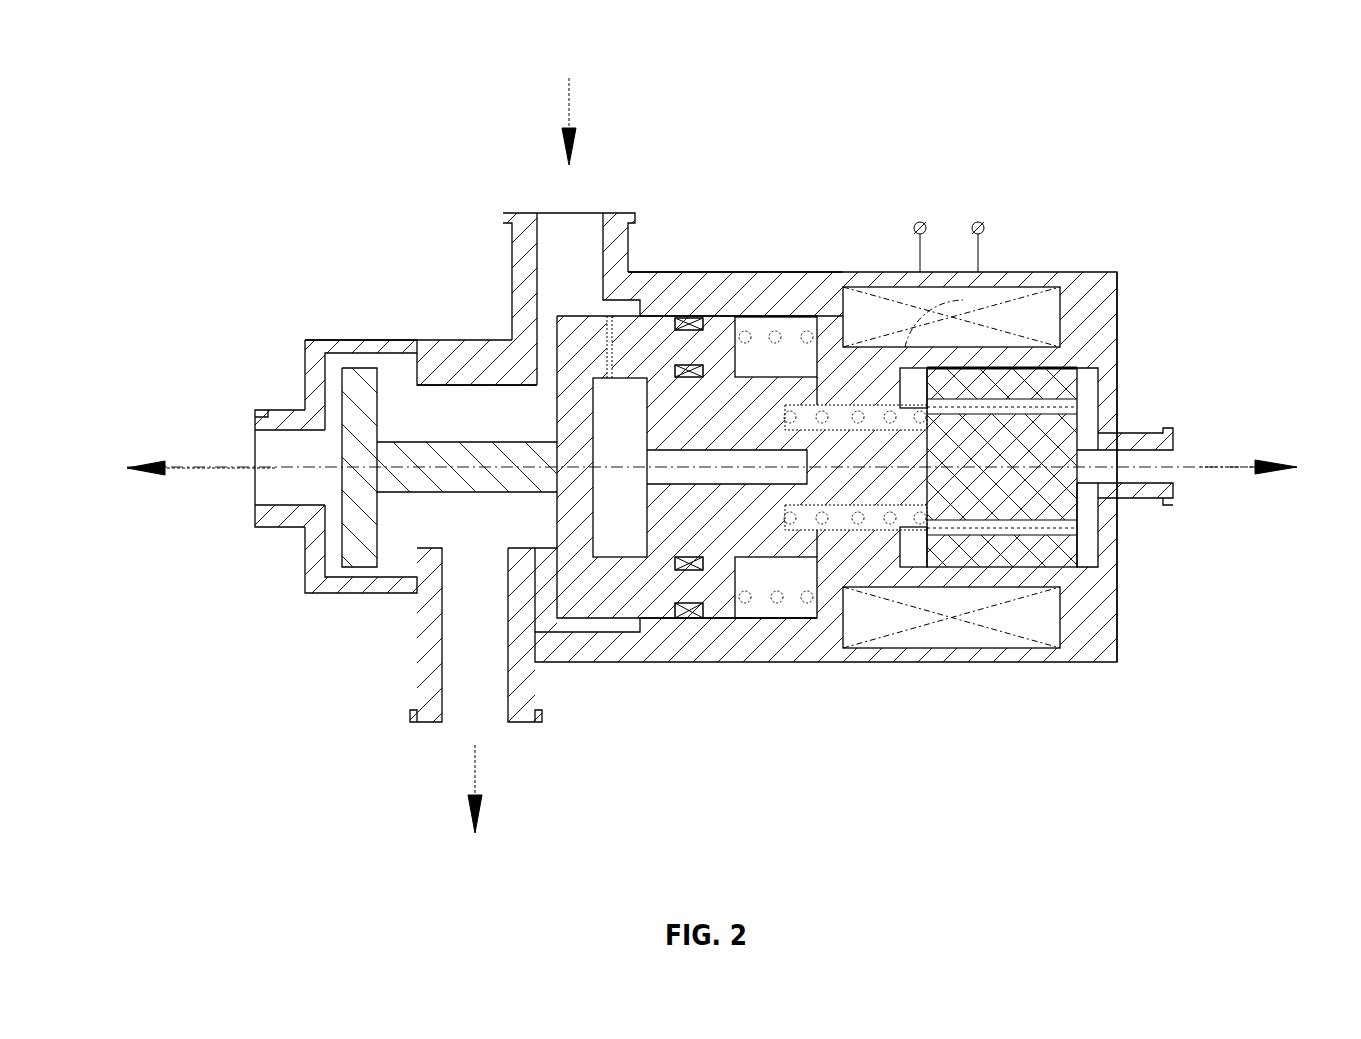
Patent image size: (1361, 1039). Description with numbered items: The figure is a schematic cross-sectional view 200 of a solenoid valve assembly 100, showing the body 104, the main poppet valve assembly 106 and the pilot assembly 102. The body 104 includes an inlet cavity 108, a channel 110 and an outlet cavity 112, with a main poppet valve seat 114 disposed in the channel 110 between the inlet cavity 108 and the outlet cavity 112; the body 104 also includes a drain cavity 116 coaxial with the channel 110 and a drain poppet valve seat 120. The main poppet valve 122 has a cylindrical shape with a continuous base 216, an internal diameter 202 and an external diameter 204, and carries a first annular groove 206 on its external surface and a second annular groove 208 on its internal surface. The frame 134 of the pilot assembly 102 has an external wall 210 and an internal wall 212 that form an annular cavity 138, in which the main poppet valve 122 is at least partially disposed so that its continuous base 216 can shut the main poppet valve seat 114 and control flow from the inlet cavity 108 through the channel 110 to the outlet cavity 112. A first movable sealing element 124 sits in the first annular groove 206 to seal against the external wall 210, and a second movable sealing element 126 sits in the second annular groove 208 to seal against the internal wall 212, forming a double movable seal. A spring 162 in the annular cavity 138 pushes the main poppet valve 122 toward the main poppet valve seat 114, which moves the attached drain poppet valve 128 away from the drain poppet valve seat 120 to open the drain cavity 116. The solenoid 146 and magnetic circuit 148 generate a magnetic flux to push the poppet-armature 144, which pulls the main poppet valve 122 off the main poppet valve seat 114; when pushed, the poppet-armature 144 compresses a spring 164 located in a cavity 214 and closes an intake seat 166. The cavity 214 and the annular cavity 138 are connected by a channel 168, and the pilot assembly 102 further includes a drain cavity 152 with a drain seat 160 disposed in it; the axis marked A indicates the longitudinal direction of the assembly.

The solenoid valve assembly 100 is at (1120, 283).
The pilot assembly 102 is at (872, 528).
The body 104 is at (490, 387).
The main poppet valve assembly 106 is at (553, 466).
The inlet cavity 108 is at (562, 232).
The channel 110 is at (433, 353).
The outlet cavity 112 is at (465, 705).
The main poppet valve seat 114 is at (550, 383).
The drain cavity 116 is at (275, 460).
The drain poppet valve seat 120 is at (403, 383).
The main poppet valve 122 is at (727, 327).
The first movable sealing element 124 is at (688, 610).
The second movable sealing element 126 is at (690, 375).
The drain poppet valve 128 is at (357, 380).
The frame 134 is at (727, 288).
The annular cavity 138 is at (795, 337).
The poppet-armature 144 is at (977, 377).
The solenoid 146 is at (860, 307).
The magnetic circuit 148 is at (1010, 357).
The drain cavity 152 is at (1087, 378).
The drain seat 160 is at (1080, 450).
The spring 162 is at (816, 599).
The spring 164 is at (820, 518).
The intake seat 166 is at (803, 485).
The channel 168 is at (805, 543).
The schematic cross-sectional view 200 is at (1262, 82).
The internal diameter 202 is at (670, 368).
The external diameter 204 is at (658, 378).
The first annular groove 206 is at (703, 607).
The second annular groove 208 is at (703, 378).
The external wall 210 is at (807, 277).
The internal wall 212 is at (783, 390).
The cavity 214 is at (847, 417).
The continuous base 216 is at (555, 413).
The axis of rotation A is at (933, 307).